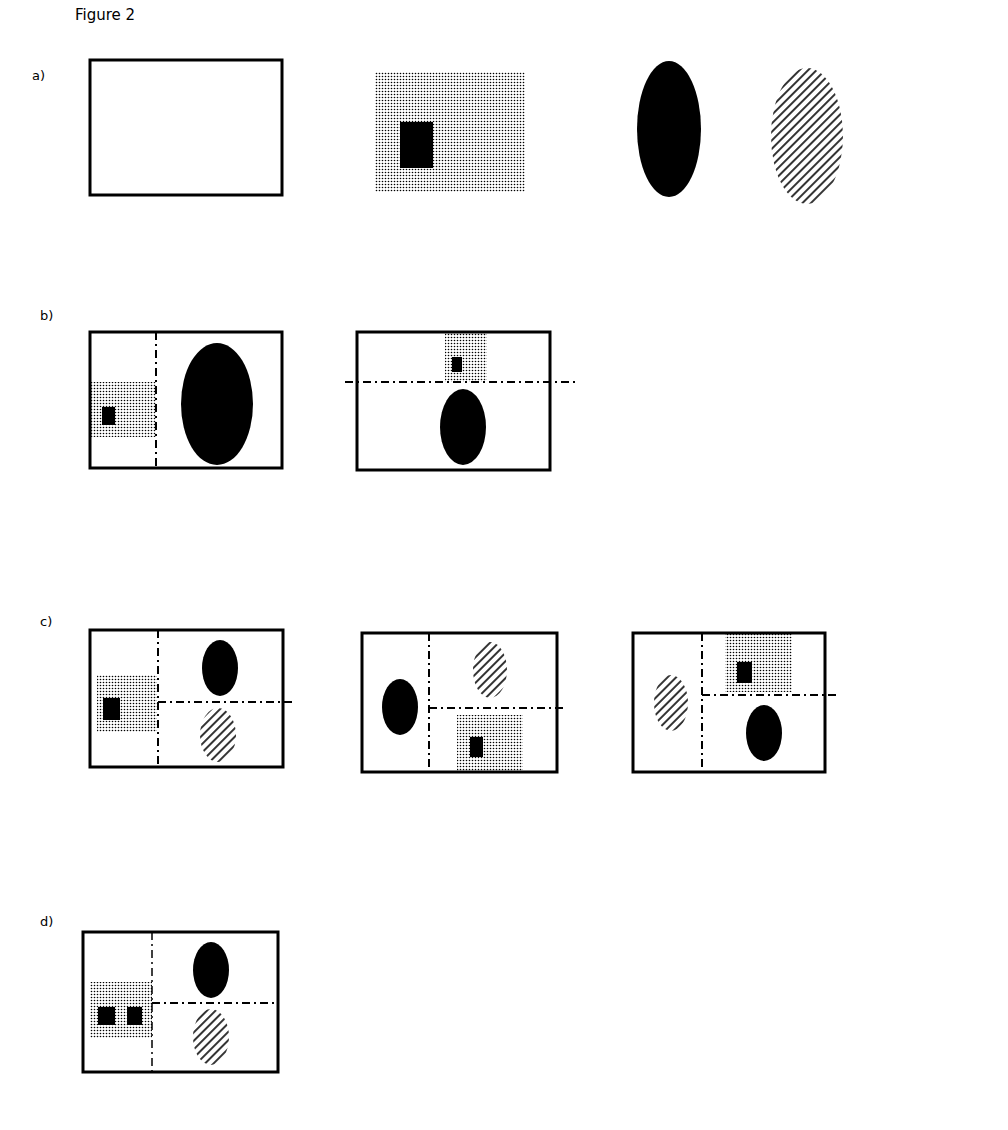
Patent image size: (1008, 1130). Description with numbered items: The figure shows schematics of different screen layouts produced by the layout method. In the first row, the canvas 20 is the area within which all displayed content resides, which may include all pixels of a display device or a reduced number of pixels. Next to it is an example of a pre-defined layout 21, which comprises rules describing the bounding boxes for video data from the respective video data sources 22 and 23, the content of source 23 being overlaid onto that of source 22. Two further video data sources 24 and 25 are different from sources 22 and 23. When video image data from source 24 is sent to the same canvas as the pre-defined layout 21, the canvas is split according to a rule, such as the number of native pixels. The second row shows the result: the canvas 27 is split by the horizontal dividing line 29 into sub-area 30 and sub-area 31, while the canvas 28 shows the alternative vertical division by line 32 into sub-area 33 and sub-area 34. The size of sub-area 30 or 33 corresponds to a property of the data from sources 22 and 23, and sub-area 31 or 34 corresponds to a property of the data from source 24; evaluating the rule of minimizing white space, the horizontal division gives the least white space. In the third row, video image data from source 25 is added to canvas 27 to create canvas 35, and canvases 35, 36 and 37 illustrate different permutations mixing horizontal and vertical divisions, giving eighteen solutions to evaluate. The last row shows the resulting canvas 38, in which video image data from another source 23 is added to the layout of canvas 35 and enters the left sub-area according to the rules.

The canvas 20 is at (289, 107).
The pre-defined layout 21 is at (422, 66).
The video data source 22 is at (527, 103).
The video data source 23 is at (421, 171).
The video data source 24 is at (703, 125).
The video data source 25 is at (845, 136).
The canvas 27 is at (135, 332).
The canvas 28 is at (455, 332).
The line 29 is at (158, 467).
The sub-area 30 is at (107, 467).
The sub-area 31 is at (255, 467).
The line 32 is at (541, 381).
The sub-area 33 is at (539, 353).
The sub-area 34 is at (541, 452).
The canvas 35 is at (145, 630).
The canvas 36 is at (423, 633).
The canvas 37 is at (708, 633).
The fourth quadrant layout 38 is at (125, 920).